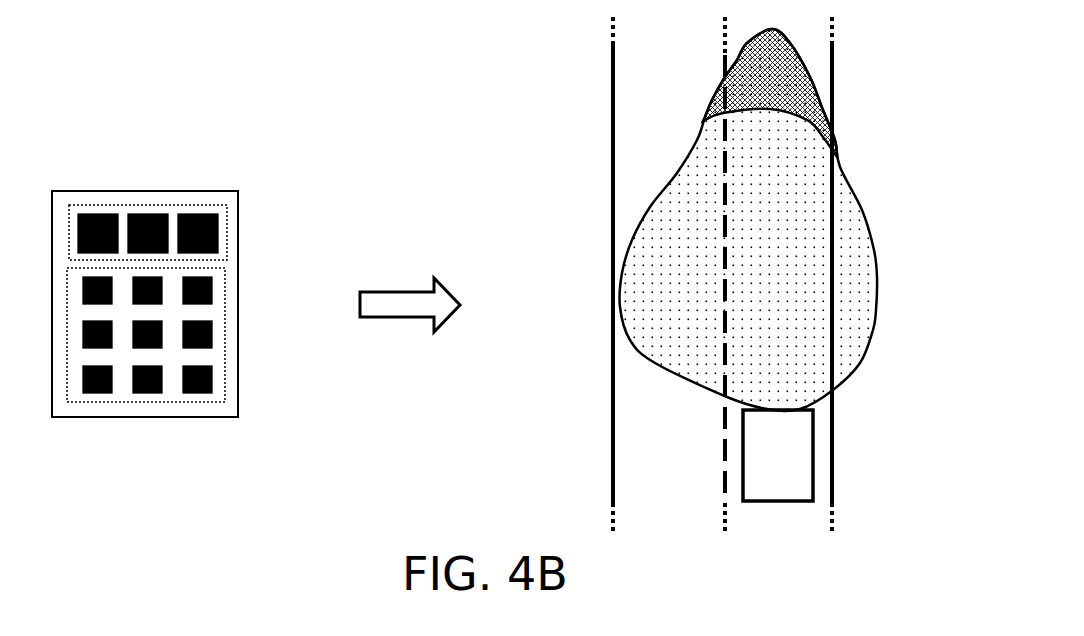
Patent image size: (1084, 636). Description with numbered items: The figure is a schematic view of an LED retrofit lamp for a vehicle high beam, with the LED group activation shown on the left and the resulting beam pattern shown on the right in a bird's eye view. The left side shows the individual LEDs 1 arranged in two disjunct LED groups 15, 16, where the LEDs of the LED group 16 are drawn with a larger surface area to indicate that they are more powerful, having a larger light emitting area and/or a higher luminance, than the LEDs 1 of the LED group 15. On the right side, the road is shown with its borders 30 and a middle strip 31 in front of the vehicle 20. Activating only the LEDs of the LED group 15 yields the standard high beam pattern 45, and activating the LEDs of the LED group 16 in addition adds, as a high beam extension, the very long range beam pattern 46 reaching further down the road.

The LED 1 is at (197, 214).
The LED group 15 is at (225, 317).
The LED group 16 is at (165, 164).
The vehicle 20 is at (817, 454).
The borders 30 is at (832, 250).
The middle strip 31 is at (705, 118).
The beam pattern 45 is at (877, 310).
The beam pattern 46 is at (812, 80).